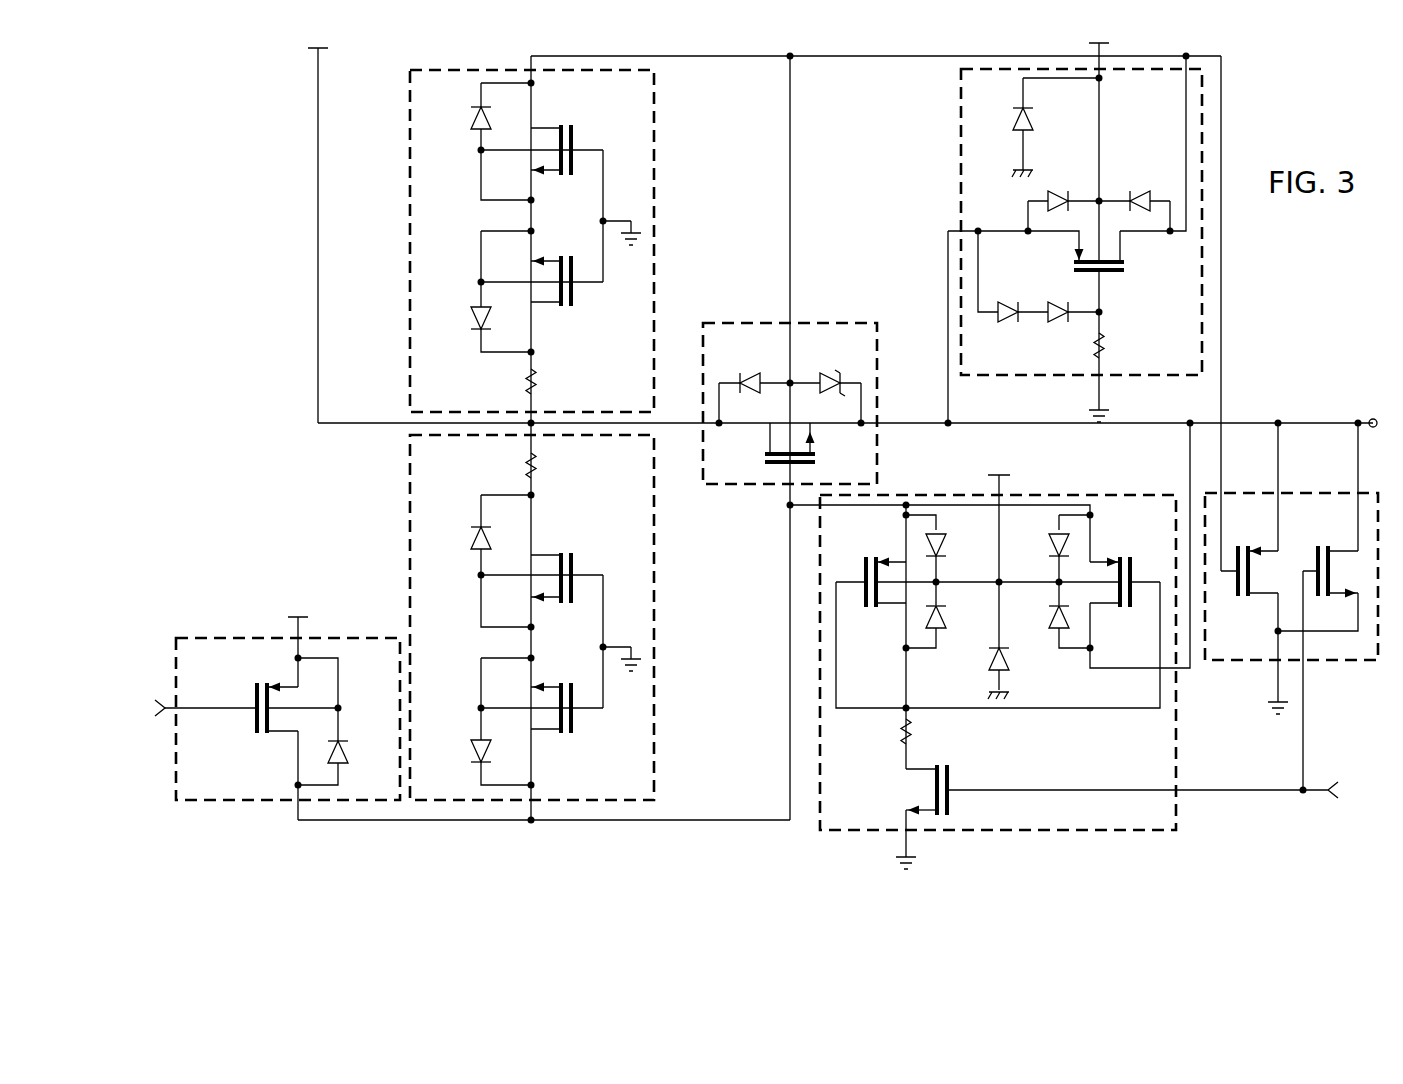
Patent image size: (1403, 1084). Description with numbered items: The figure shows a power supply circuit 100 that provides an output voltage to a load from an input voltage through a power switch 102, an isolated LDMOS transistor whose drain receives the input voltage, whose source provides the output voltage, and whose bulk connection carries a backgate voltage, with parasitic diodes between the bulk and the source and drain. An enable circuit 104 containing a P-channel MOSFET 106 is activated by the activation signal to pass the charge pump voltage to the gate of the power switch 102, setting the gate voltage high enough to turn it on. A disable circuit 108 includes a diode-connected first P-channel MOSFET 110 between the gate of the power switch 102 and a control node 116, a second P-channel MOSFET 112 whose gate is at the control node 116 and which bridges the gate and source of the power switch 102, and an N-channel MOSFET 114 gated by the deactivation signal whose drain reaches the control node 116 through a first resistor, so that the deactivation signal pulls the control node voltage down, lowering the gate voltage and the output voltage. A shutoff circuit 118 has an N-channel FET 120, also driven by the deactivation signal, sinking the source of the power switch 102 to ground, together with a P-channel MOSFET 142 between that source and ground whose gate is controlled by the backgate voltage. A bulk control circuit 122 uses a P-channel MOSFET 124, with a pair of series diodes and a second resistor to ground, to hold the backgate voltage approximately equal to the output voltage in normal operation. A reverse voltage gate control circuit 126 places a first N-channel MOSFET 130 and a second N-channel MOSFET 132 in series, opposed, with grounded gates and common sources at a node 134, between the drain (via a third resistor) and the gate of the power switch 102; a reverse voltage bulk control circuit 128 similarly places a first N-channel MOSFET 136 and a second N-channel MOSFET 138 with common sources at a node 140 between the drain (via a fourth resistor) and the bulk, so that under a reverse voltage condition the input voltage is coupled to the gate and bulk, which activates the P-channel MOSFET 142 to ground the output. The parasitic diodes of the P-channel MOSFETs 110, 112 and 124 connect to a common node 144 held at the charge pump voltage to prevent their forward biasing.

The power supply circuit 100 is at (280, 298).
The power switch 102 is at (755, 320).
The enable circuit 104 is at (230, 636).
The P-channel MOSFET 106 is at (254, 722).
The disable circuit 108 is at (1178, 730).
The first P-channel MOSFET 110 is at (862, 608).
The second P-channel MOSFET 112 is at (1134, 608).
The N-channel MOSFET 114 is at (950, 788).
The control node 116 is at (912, 712).
The shutoff circuit 118 is at (1330, 683).
The N-channel FET 120 is at (1317, 560).
The bulk control circuit 122 is at (960, 172).
The P-channel MOSFET 124 is at (1110, 278).
The reverse voltage gate control circuit 126 is at (408, 505).
The reverse voltage bulk control circuit 128 is at (408, 240).
The first N-channel MOSFET 130 is at (577, 571).
The second N-channel MOSFET 132 is at (577, 721).
The node 134 is at (502, 640).
The first N-channel MOSFET 136 is at (577, 143).
The second N-channel MOSFET 138 is at (577, 300).
The node 140 is at (500, 218).
The P-channel MOSFET 142 is at (1240, 600).
The common node 144 is at (1160, 106).